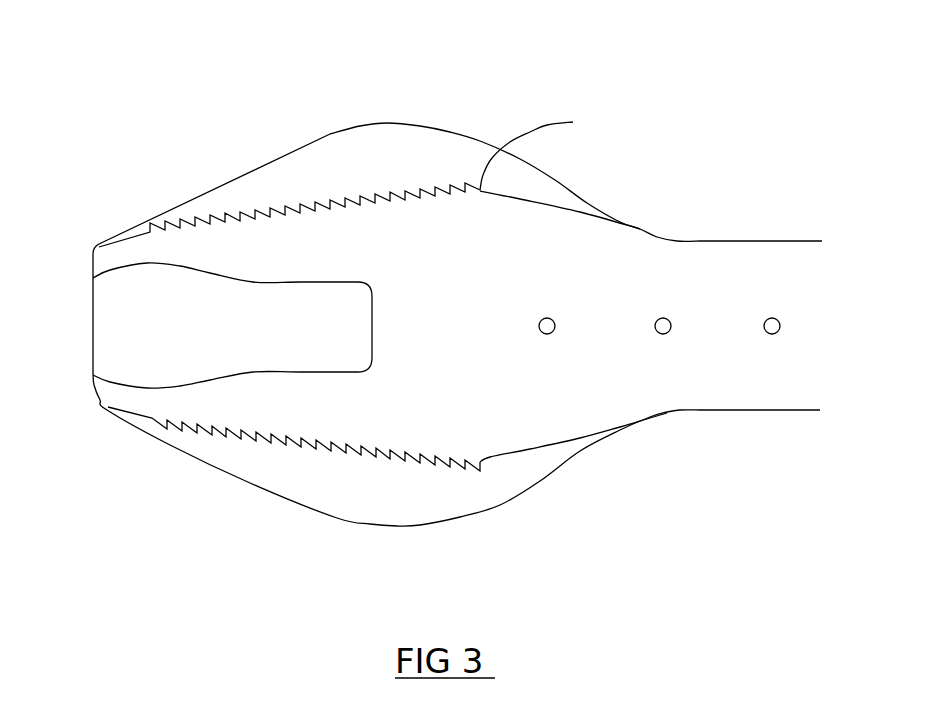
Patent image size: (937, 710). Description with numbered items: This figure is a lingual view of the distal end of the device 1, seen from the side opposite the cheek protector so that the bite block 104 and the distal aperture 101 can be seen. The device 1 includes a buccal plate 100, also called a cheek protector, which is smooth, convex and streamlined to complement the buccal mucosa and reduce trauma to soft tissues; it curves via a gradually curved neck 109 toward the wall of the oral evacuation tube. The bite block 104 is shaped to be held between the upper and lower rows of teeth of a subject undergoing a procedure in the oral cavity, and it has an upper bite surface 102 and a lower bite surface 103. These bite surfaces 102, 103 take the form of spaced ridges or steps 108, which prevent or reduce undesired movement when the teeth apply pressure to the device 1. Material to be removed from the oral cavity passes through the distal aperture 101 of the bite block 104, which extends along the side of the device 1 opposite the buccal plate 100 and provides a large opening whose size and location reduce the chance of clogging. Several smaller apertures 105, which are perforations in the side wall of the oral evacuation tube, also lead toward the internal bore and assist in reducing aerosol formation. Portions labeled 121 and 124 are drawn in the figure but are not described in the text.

The device 1 is at (138, 490).
The buccal plate 100 is at (383, 150).
The distal aperture 101 is at (113, 370).
The upper bite surface 102 is at (297, 210).
The lower bite surface 103 is at (313, 433).
The bite block 104 is at (430, 430).
The smaller apertures 105 is at (557, 336).
The spaced ridges/steps 108 is at (555, 150).
The gradually curved neck 109 is at (642, 230).
The lower body portion 121 is at (335, 493).
The lower tab 124 is at (723, 288).